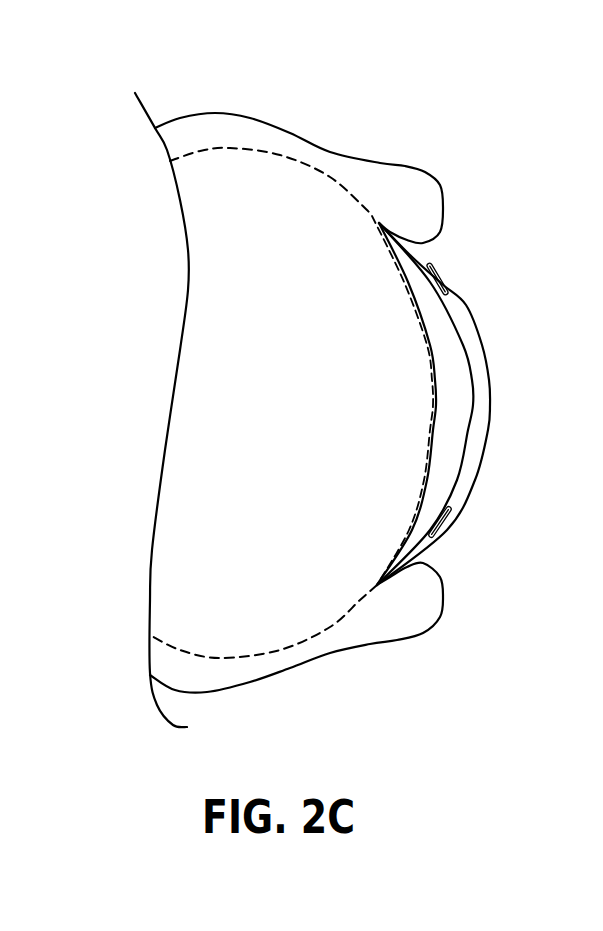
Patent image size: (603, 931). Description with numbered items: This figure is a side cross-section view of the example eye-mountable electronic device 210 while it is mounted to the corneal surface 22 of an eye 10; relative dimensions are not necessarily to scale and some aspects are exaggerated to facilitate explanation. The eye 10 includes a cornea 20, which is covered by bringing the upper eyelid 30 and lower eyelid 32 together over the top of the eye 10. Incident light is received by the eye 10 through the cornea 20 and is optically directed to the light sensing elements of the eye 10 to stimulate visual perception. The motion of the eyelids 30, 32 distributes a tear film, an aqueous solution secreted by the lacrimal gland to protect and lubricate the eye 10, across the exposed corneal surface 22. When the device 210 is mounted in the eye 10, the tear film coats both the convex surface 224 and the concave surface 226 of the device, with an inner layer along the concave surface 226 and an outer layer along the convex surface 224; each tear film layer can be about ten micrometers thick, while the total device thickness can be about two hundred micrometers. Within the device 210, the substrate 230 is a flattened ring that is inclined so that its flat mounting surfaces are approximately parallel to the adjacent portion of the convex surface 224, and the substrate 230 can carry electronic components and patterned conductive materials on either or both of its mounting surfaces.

The eye 10 is at (352, 674).
The cornea 20 is at (473, 404).
The corneal surface 22 is at (465, 459).
The upper eyelid 30 is at (445, 190).
The lower eyelid 32 is at (444, 586).
The eye-mountable electronic device 210 is at (476, 303).
The convex surface 224 is at (486, 352).
The concave surface 226 is at (470, 401).
The substrate 230 is at (441, 272).